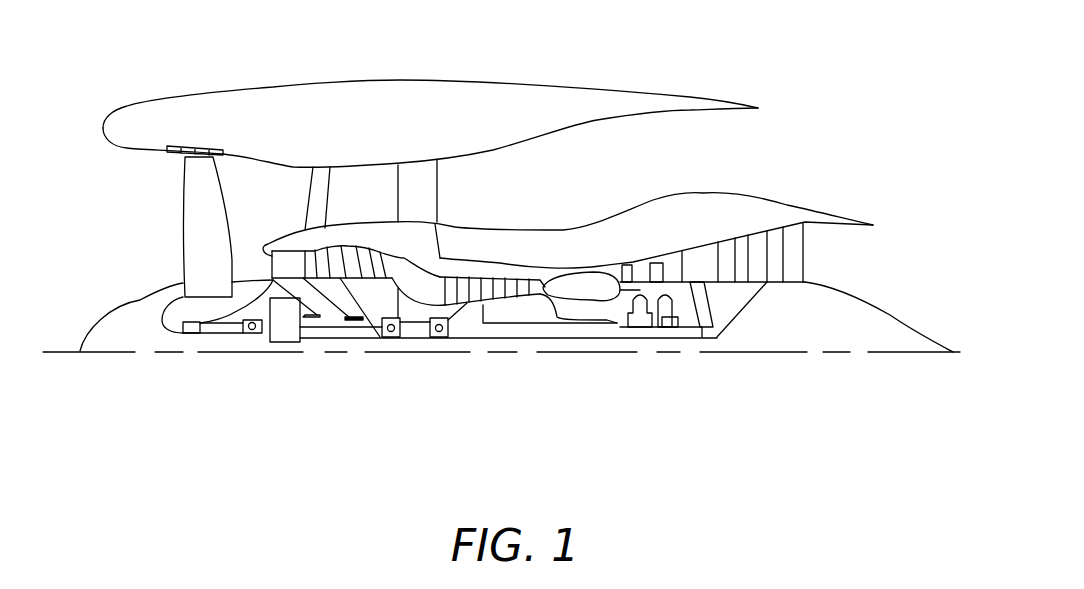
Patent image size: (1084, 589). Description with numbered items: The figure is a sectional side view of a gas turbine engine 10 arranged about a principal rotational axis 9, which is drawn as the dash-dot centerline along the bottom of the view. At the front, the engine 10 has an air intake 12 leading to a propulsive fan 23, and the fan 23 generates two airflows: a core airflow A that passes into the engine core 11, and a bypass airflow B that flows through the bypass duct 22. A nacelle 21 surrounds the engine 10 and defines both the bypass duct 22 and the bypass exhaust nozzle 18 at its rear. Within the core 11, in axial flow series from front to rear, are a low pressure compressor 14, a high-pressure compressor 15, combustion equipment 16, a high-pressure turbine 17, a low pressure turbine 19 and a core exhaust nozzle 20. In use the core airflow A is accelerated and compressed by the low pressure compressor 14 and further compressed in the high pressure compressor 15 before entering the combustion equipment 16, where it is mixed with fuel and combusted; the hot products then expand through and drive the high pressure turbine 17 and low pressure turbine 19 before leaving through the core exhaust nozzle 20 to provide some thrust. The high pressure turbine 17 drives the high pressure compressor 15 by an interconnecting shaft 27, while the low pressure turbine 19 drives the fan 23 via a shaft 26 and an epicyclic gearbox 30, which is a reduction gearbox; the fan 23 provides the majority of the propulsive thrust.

The principal rotational axis 9 is at (755, 354).
The gas turbine engine 10 is at (178, 97).
The core 11 is at (555, 238).
The air intake 12 is at (133, 176).
The low pressure compressor 14 is at (355, 257).
The high-pressure compressor 15 is at (500, 290).
The combustion equipment 16 is at (577, 290).
The high-pressure turbine 17 is at (640, 275).
The bypass exhaust nozzle 18 is at (755, 147).
The low pressure turbine 19 is at (775, 240).
The core exhaust nozzle 20 is at (845, 252).
The nacelle 21 is at (412, 97).
The bypass duct 22 is at (680, 162).
The propulsive fan 23 is at (185, 232).
The shaft 26 is at (493, 342).
The interconnecting shaft 27 is at (537, 327).
The epicyclic gearbox 30 is at (283, 342).
The core airflow A is at (255, 263).
The bypass airflow B is at (255, 198).